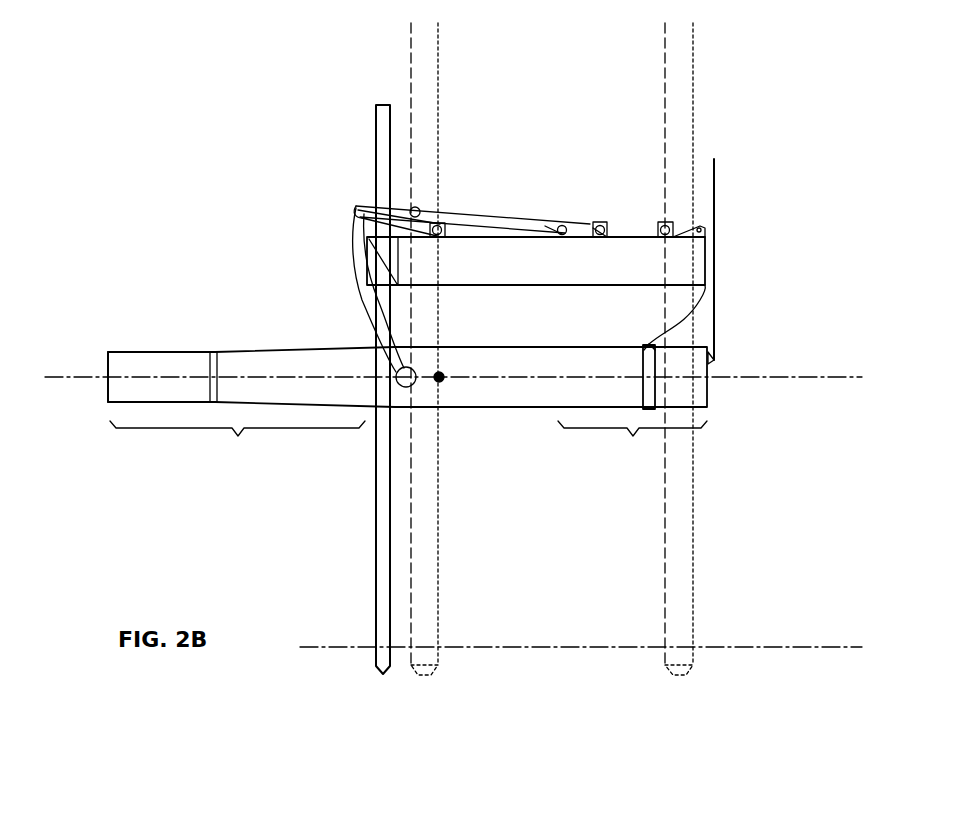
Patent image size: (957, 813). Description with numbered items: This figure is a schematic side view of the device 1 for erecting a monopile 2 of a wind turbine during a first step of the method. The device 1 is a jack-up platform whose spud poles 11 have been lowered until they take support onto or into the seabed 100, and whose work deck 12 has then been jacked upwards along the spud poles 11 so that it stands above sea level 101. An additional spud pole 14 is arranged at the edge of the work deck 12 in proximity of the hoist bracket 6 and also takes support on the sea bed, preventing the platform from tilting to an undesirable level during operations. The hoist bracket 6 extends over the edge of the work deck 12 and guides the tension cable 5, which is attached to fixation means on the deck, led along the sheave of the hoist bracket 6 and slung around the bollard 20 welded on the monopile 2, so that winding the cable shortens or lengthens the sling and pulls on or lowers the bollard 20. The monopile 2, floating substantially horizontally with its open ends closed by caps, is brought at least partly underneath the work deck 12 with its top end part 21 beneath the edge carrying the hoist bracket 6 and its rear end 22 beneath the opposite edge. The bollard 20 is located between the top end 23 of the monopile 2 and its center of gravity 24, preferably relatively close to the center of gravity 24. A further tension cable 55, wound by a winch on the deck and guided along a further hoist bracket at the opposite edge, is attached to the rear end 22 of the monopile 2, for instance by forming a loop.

The device 1 is at (742, 196).
The monopile 2 is at (188, 345).
The tension cable 5 is at (357, 302).
The hoist bracket 6 is at (360, 214).
The spud poles 11 is at (430, 581).
The work deck 12 is at (631, 236).
The additional spud pole 14 is at (380, 583).
The bollard 20 is at (409, 387).
The top end part 21 is at (237, 443).
The rear end 22 is at (632, 443).
The top end 23 is at (107, 357).
The center of gravity 24 is at (439, 371).
The further tension cable 55 is at (675, 318).
The seabed 100 is at (815, 646).
The sea level 101 is at (816, 376).